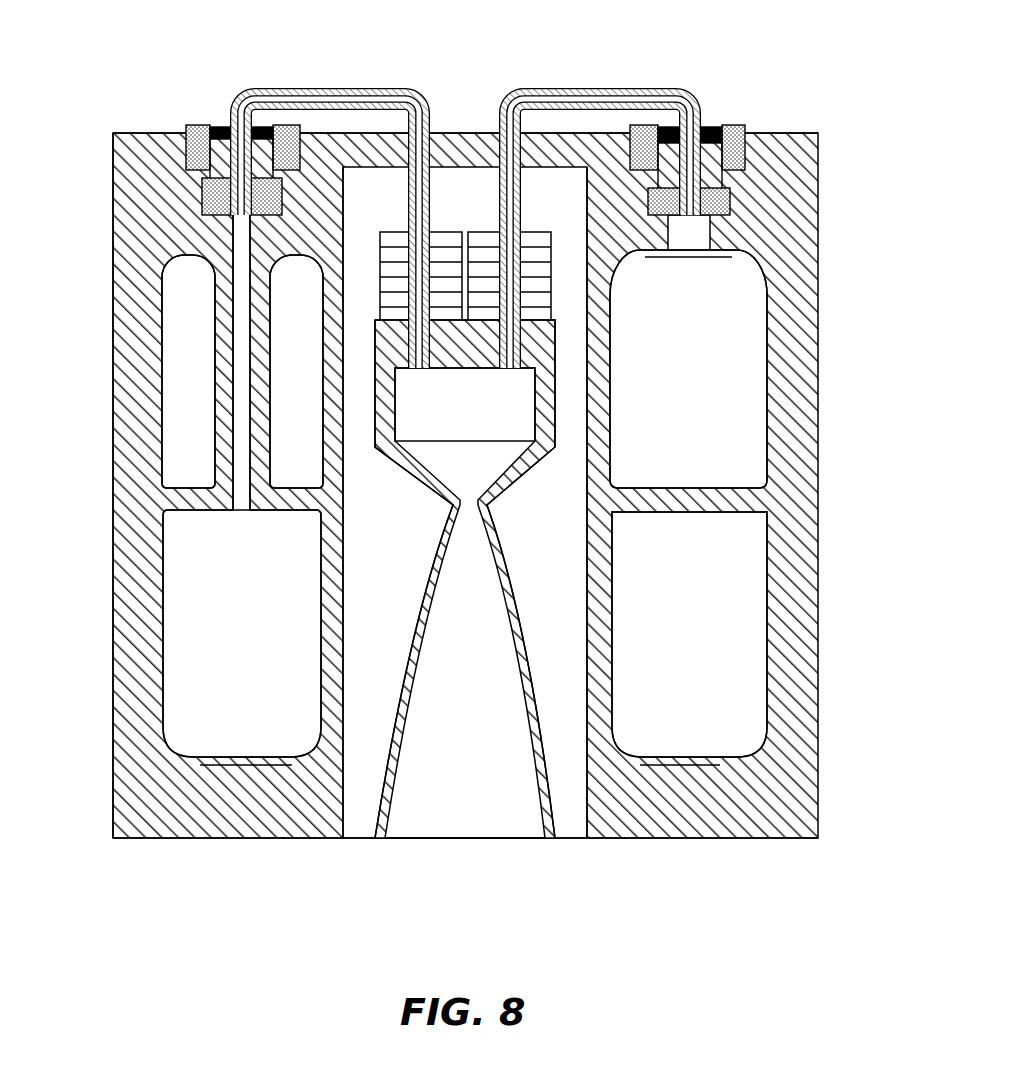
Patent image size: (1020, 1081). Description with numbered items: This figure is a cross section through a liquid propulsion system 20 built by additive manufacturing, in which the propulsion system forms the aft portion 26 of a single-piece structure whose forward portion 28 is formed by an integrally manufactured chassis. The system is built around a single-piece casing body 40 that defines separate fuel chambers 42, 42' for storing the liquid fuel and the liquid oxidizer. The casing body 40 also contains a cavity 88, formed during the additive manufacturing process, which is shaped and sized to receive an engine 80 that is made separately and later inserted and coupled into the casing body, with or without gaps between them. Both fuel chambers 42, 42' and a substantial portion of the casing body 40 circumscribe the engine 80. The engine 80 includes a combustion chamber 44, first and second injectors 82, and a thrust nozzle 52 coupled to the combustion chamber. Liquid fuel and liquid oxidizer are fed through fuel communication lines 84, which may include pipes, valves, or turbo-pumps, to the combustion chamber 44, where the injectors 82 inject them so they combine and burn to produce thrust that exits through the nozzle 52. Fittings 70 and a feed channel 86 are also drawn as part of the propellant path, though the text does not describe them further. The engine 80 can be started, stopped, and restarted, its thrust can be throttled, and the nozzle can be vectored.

The propulsion system 20 is at (140, 62).
The aft portion 26 is at (826, 820).
The forward portion 28 is at (820, 150).
The casing body 40 is at (110, 240).
The fuel chamber 42 is at (471, 633).
The fuel chamber 42' is at (481, 369).
The combustion chamber 44 is at (488, 413).
The thrust nozzle 52 is at (523, 680).
The fill valve fitting 70 is at (198, 125).
The engine 80 is at (514, 529).
The first and second injectors 82 is at (487, 232).
The fuel communication lines 84 is at (331, 87).
The feed channel 86 is at (215, 388).
The cavity 88 is at (583, 800).